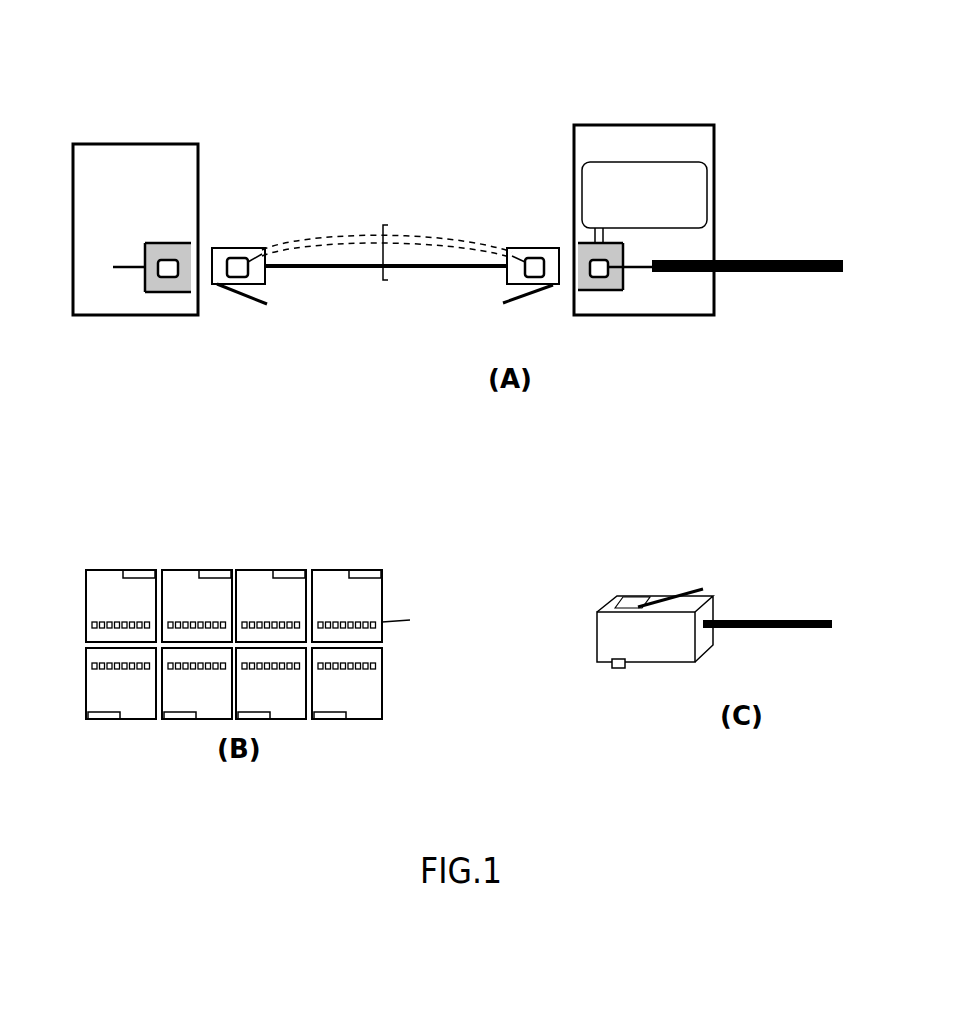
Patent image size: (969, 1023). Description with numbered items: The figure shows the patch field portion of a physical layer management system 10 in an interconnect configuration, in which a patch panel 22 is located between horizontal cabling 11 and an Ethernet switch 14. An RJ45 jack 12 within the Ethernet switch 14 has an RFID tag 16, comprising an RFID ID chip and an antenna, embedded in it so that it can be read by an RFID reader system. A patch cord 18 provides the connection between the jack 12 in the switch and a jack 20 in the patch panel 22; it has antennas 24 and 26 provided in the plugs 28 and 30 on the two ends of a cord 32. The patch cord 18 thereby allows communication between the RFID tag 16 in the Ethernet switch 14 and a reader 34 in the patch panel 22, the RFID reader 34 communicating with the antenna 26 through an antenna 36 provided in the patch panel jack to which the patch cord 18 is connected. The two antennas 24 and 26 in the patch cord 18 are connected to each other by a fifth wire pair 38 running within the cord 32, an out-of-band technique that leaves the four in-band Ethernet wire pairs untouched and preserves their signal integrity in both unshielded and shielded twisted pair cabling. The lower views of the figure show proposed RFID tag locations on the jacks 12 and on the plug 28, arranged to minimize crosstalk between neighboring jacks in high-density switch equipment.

The physical layer management system 10 is at (327, 95).
The horizontal cabling 11 is at (810, 260).
The RJ45 jack 12 is at (153, 292).
The Ethernet switch 14 is at (137, 144).
The RFID tag 16 is at (145, 275).
The patch cord 18 is at (383, 222).
The jack 20 is at (600, 290).
The patch panel 22 is at (643, 125).
The antenna 24 is at (246, 270).
The antenna 26 is at (520, 278).
The plug 28 is at (235, 248).
The plug 30 is at (530, 248).
The cord 32 is at (372, 252).
The RFID reader 34 is at (680, 228).
The antenna 36 is at (608, 277).
The fifth wire pair 38 is at (438, 237).